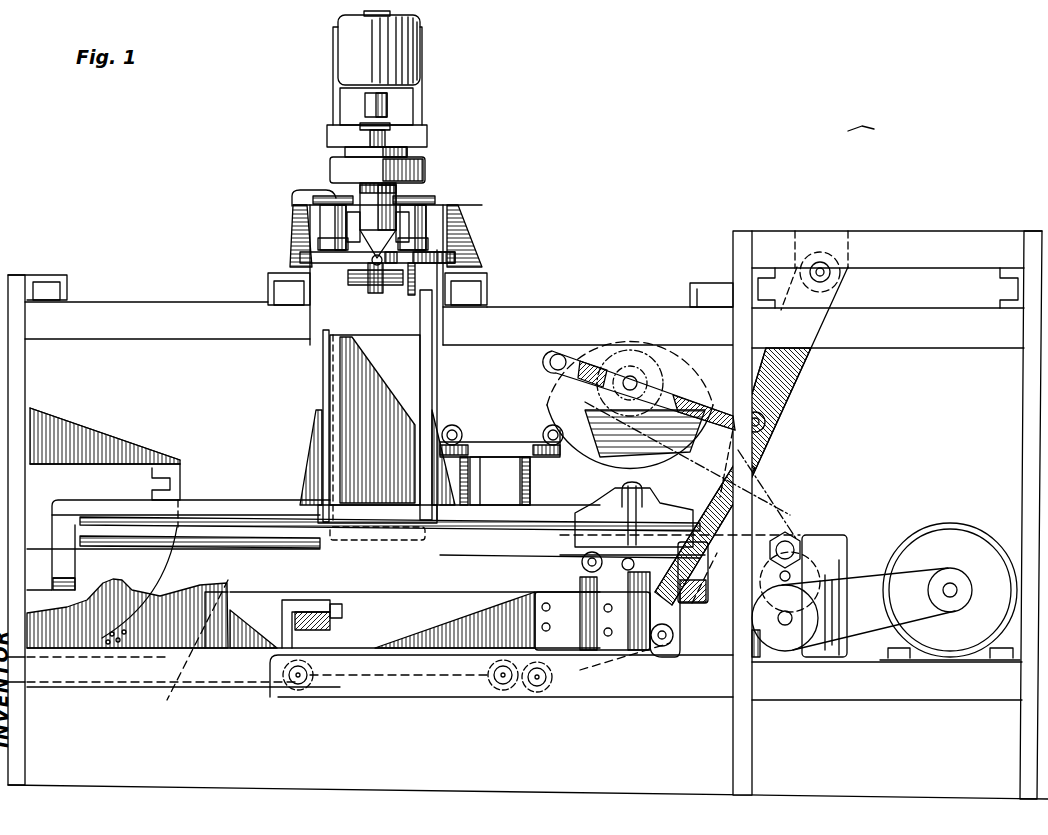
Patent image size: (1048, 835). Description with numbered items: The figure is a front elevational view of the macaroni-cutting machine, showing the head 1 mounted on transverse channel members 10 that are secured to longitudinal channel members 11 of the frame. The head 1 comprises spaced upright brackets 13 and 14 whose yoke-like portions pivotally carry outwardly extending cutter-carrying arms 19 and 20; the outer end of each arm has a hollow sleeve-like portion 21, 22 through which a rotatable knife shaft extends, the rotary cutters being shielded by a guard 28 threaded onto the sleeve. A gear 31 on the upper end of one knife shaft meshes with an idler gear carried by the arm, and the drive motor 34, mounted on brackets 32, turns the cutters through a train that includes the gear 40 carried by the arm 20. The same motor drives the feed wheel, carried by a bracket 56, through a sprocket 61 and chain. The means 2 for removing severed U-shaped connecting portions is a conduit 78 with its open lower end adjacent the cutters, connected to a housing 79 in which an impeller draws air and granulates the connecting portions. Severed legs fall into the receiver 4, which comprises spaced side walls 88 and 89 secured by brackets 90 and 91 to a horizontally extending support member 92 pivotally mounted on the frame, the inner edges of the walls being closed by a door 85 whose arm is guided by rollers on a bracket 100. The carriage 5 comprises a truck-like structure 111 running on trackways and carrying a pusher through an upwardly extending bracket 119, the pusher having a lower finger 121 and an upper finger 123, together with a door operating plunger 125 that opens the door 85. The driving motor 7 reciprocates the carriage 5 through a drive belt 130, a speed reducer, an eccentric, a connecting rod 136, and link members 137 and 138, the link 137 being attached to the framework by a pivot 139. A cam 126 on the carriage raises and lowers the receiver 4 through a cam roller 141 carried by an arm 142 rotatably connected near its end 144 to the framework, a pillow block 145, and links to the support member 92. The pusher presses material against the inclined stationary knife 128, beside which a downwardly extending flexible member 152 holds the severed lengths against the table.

The head 1 is at (466, 158).
The means for removing severed U-shaped connecting portions 2 is at (720, 82).
The receiver or collector 4 is at (318, 377).
The carriage 5 is at (430, 680).
The driving motor 7 is at (398, 325).
The transverse channel members 10 is at (268, 287).
The longitudinal angle or channel members 11 is at (556, 296).
The upright bracket 13 is at (462, 236).
The upright bracket 14 is at (305, 217).
The cutter-carrying arm 19 is at (404, 232).
The cutter-carrying arm 20 is at (328, 231).
The sleeve-like portion 21 is at (428, 216).
The sleeve-like portion 22 is at (325, 214).
The guard 28 is at (460, 258).
The gear 31 is at (440, 197).
The brackets 32 is at (334, 96).
The drive motor 34 is at (348, 47).
The gear 40 is at (322, 193).
The bracket 56 is at (350, 278).
The sprocket 61 is at (415, 297).
The conduit 78 is at (405, 226).
The housing 79 is at (332, 173).
The discharge door or gate 85 is at (377, 437).
The side wall member 88 is at (323, 401).
The side wall member 89 is at (434, 368).
The bracket 90 is at (307, 476).
The bracket 91 is at (446, 470).
The support member 92 is at (70, 510).
The bracket 100 is at (512, 491).
The truck-like structure 111 is at (349, 684).
The bracket 119 is at (250, 650).
The lower finger-like member 121 is at (169, 697).
The upper finger portion 123 is at (180, 586).
The door operating plunger 125 is at (342, 608).
The cam 126 is at (470, 616).
The stationary knife 128 is at (130, 568).
The drive belt 130 is at (860, 575).
The connecting rod 136 is at (668, 452).
The link member 137 is at (796, 386).
The link member 138 is at (594, 682).
The pivot 139 is at (836, 277).
The cam roller 141 is at (586, 563).
The arm 142 is at (760, 520).
The end of arm 144 is at (800, 545).
The pillow block 145 is at (622, 490).
The flexible member 152 is at (136, 632).